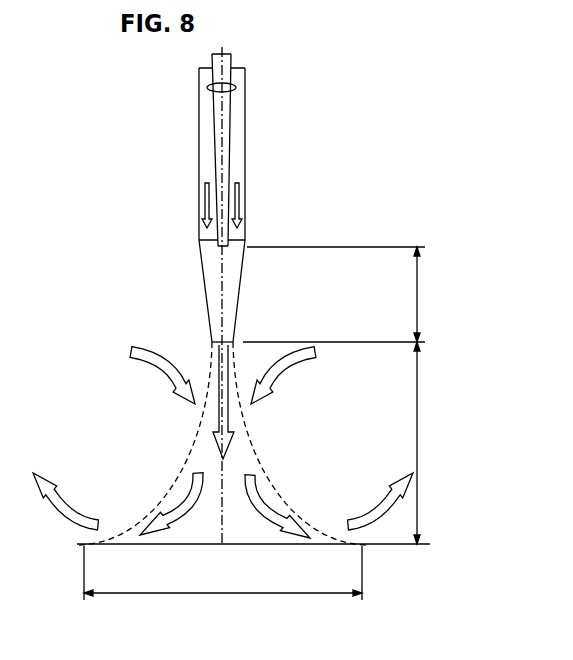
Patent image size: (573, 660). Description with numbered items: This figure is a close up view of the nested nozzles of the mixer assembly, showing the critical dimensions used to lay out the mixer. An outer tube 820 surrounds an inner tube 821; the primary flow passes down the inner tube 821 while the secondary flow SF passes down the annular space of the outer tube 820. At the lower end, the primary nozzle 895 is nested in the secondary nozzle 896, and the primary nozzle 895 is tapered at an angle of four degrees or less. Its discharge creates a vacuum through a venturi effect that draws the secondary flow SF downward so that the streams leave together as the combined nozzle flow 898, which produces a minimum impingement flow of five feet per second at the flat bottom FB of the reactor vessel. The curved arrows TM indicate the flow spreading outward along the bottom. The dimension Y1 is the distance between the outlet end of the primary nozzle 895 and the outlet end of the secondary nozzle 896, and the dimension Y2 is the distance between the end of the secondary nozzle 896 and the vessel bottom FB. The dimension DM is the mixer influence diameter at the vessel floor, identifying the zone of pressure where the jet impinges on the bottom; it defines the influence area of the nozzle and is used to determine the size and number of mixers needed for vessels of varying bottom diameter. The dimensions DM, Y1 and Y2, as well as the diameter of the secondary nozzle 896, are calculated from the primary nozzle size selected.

The outer tube 820 is at (245, 88).
The inner tube 821 is at (230, 137).
The secondary flow SF is at (235, 200).
The primary nozzle 895 is at (230, 240).
The secondary nozzle 896 is at (233, 338).
The combined nozzle flow 898 is at (226, 432).
The turbulent mixing flow TM is at (397, 497).
The flat bottom FB is at (225, 547).
The distance between outlet ends of primary and secondary nozzles Y1 is at (351, 294).
The distance between end of secondary nozzle and vessel bottom Y2 is at (436, 443).
The mixer influence diameter DM is at (223, 573).